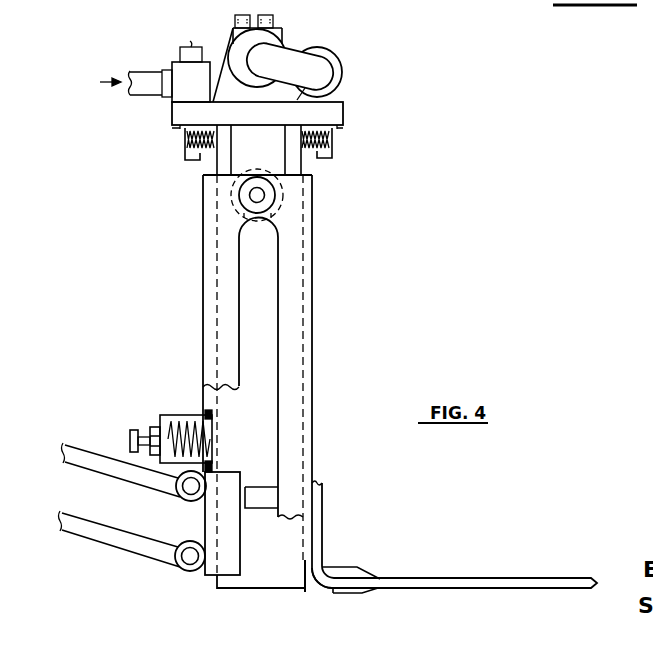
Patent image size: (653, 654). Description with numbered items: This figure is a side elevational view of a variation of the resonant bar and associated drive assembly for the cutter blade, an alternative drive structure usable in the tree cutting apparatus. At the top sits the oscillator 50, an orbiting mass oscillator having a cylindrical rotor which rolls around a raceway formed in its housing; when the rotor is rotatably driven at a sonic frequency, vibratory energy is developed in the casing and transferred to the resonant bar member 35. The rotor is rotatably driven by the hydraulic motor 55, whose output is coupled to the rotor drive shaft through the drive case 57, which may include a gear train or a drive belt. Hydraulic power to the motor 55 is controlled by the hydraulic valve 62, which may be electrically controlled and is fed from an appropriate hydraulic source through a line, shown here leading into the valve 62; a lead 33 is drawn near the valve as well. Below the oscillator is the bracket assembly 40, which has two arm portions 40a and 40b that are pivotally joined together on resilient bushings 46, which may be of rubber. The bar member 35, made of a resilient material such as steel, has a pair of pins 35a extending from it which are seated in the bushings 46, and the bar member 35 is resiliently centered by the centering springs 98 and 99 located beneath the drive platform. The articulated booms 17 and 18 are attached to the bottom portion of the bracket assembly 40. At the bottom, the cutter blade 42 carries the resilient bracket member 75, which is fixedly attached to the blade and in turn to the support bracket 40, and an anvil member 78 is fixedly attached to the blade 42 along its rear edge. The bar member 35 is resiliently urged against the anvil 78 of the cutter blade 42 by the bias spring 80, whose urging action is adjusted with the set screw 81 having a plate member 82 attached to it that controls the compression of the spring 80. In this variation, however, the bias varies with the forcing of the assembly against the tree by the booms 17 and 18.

The articulated boom 17 is at (78, 442).
The articulated boom 18 is at (65, 535).
The wire lead 33 is at (192, 38).
The bar member 35 is at (270, 378).
The pin 35a is at (263, 197).
The bracket assembly 40 is at (226, 383).
The arm portion 40a is at (290, 275).
The arm portion 40b is at (222, 275).
The cutter blade 42 is at (432, 582).
The resilient bushings 46 is at (262, 172).
The oscillator 50 is at (243, 48).
The hydraulic motor 55 is at (318, 47).
The drive case 57 is at (333, 70).
The hydraulic valve 62 is at (178, 78).
The resilient bracket member 75 is at (316, 528).
The anvil member 78 is at (303, 597).
The bias spring 80 is at (192, 413).
The set screw 81 is at (128, 432).
The plate member 82 is at (160, 413).
The centering spring 98 is at (337, 130).
The centering spring 99 is at (182, 128).